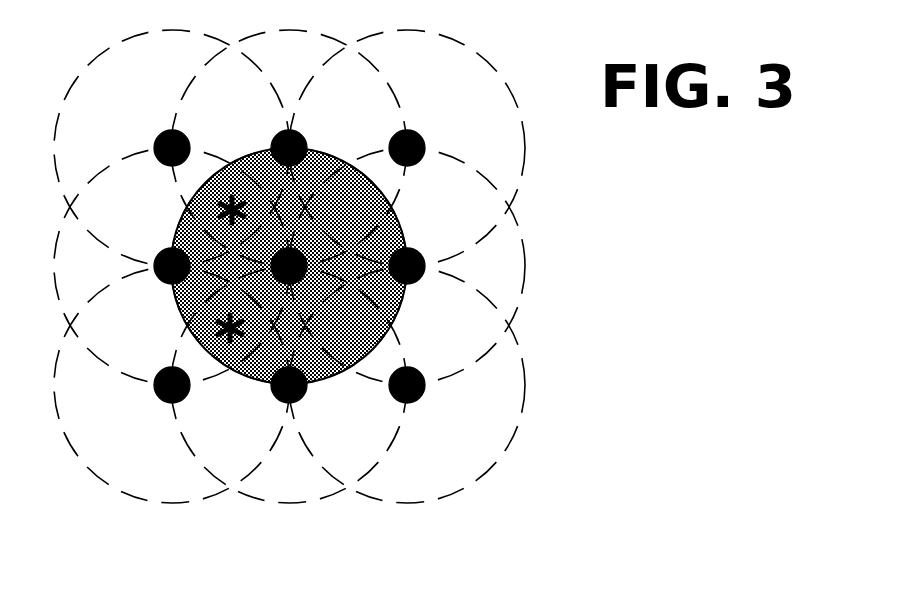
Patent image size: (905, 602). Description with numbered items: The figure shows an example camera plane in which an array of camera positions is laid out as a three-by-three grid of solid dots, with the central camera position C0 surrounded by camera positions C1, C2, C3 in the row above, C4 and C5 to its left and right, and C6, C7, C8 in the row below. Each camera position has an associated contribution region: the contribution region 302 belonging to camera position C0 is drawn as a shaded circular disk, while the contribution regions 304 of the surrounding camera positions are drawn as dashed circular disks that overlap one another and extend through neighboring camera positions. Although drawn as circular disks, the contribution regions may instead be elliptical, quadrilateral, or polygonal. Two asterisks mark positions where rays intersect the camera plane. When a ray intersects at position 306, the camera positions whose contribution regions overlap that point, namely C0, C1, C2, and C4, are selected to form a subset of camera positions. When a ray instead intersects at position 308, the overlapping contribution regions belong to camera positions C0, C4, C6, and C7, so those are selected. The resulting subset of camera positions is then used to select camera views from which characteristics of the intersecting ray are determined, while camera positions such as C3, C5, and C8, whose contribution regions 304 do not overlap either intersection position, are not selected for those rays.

The contribution region 302 is at (340, 154).
The contribution region 304 is at (487, 60).
The position 306 is at (220, 208).
The position 308 is at (220, 326).
The camera position C0 is at (282, 255).
The camera position C1 is at (160, 137).
The camera position C2 is at (277, 137).
The camera position C3 is at (395, 137).
The camera position C4 is at (159, 255).
The camera position C5 is at (395, 255).
The camera position C6 is at (160, 398).
The camera position C7 is at (277, 398).
The camera position C8 is at (397, 398).